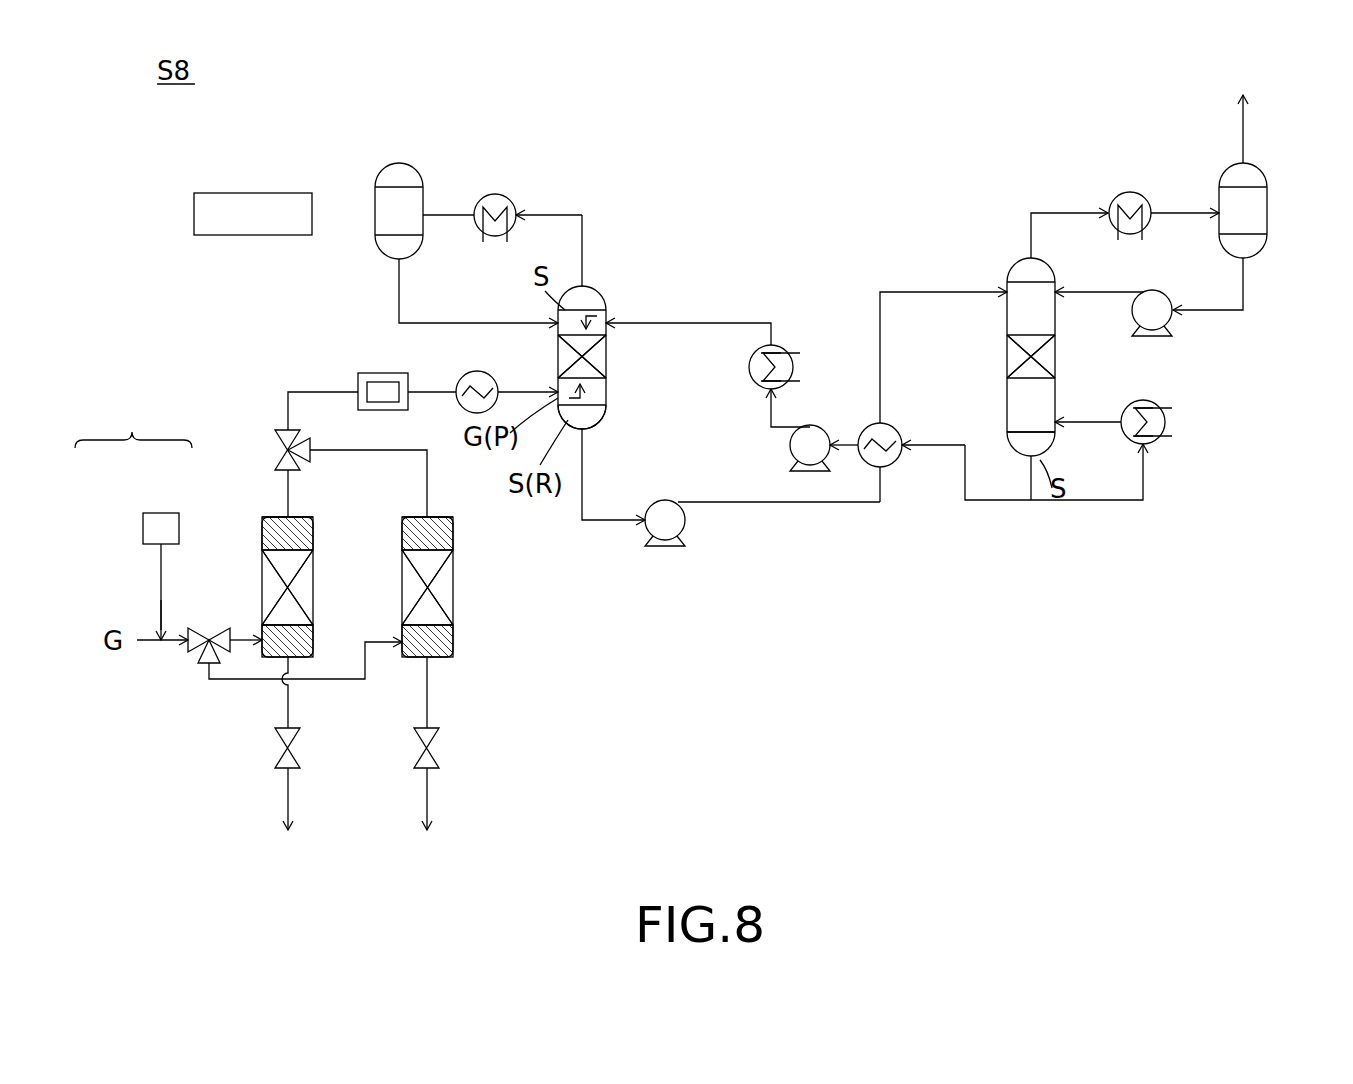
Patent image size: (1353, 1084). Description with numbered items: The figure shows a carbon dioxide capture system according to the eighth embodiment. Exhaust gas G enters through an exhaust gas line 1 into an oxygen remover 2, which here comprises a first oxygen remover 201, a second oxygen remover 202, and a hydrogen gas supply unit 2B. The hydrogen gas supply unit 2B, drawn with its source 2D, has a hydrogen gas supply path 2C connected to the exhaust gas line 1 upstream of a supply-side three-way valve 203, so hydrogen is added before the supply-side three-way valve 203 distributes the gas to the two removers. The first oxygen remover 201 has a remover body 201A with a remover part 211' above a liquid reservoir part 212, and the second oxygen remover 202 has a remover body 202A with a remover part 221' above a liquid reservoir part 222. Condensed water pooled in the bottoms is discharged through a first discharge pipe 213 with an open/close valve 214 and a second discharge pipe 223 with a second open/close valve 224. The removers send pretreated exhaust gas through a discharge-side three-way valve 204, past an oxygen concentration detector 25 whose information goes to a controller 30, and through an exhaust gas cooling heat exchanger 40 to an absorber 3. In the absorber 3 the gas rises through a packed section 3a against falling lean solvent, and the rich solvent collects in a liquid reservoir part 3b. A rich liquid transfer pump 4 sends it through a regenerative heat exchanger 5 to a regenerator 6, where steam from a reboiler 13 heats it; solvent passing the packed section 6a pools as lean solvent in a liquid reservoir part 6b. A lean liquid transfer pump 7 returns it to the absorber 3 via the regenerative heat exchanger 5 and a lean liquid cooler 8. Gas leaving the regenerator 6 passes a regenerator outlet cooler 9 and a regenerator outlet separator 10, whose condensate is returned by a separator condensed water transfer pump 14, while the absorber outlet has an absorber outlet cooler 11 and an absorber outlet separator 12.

The exhaust gas line 1 is at (156, 636).
The oxygen remover 2 is at (135, 375).
The hydrogen gas supply unit 2B is at (133, 423).
The hydrogen gas supply path 2C is at (160, 563).
The gas source 2D is at (161, 513).
The absorber 3 is at (610, 300).
The packed section 3a is at (608, 356).
The liquid reservoir part 3b is at (608, 416).
The rich liquid transfer pump 4 is at (650, 505).
The regenerative heat exchanger 5 is at (895, 466).
The regenerator 6 is at (1000, 275).
The packed section 6a is at (1005, 346).
The liquid reservoir part 6b is at (1005, 440).
The lean liquid transfer pump 7 is at (788, 448).
The lean liquid cooler 8 is at (782, 350).
The regenerator outlet cooler 9 is at (1130, 191).
The regenerator outlet separator 10 is at (1270, 213).
The absorber outlet cooler 11 is at (510, 198).
The absorber outlet separator 12 is at (390, 163).
The reboiler 13 is at (1155, 405).
The separator condensed water transfer pump 14 is at (1135, 322).
The oxygen concentration detector 25 is at (360, 373).
The controller 30 is at (255, 193).
The exhaust gas cooling heat exchanger 40 is at (460, 378).
The first oxygen remover 201 is at (262, 525).
The remover body 201A is at (312, 530).
The second oxygen remover 202 is at (458, 655).
The remover body 202A is at (455, 525).
The supply-side three-way valve 203 is at (200, 660).
The discharge-side three-way valve 204 is at (276, 440).
The remover part 211' is at (243, 587).
The liquid reservoir part 212 is at (313, 632).
The first discharge pipe 213 is at (290, 703).
The open/close valve 214 is at (300, 750).
The remover part 221' is at (475, 587).
The liquid reservoir part 222 is at (455, 640).
The second discharge pipe 223 is at (430, 705).
The second open/close valve 224 is at (438, 750).